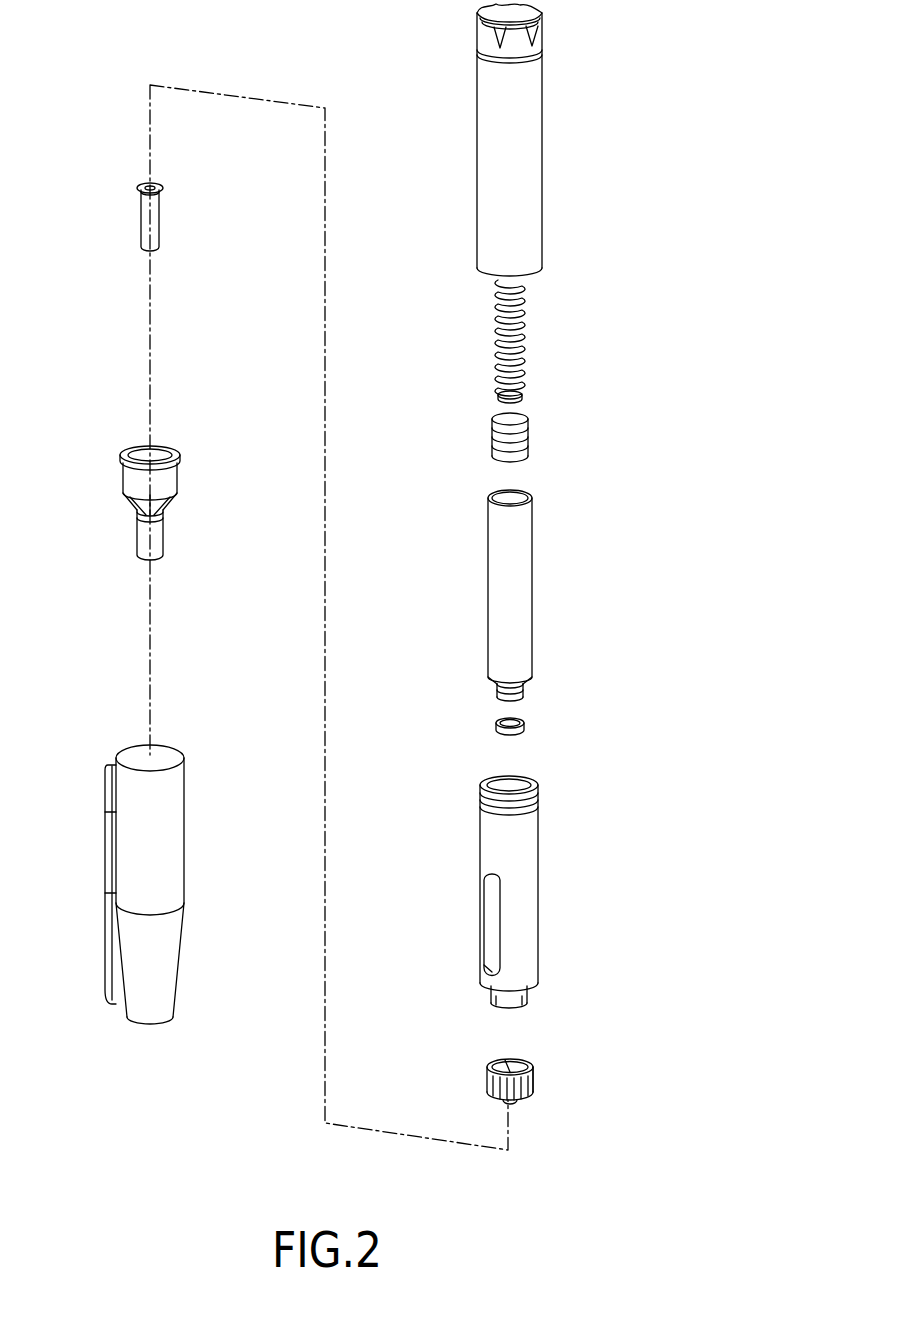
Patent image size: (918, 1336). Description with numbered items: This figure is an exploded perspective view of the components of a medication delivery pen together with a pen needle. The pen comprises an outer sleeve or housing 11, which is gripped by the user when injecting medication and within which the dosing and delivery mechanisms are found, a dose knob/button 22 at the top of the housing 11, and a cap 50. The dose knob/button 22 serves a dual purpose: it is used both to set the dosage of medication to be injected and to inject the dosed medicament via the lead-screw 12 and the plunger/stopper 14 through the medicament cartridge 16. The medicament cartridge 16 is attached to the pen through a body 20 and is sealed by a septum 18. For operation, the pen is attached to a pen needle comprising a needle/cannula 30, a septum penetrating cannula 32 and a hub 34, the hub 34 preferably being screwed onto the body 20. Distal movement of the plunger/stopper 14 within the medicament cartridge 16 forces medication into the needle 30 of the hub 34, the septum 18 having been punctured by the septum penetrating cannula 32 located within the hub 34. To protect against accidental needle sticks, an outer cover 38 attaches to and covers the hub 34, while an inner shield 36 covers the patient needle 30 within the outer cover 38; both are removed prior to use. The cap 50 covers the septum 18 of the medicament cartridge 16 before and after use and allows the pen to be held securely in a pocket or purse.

The housing 11 is at (547, 140).
The dose knob/button 22 is at (546, 35).
The lead-screw 12 is at (518, 340).
The plunger/stopper 14 is at (529, 438).
The medicament cartridge 16 is at (532, 583).
The septum 18 is at (520, 732).
The body 20 is at (538, 902).
The needle/cannula 30 is at (521, 1089).
The septum penetrating cannula 32 is at (510, 1072).
The hub 34 is at (532, 1070).
The inner shield 36 is at (142, 215).
The outer cover 38 is at (122, 483).
The cap 50 is at (186, 850).